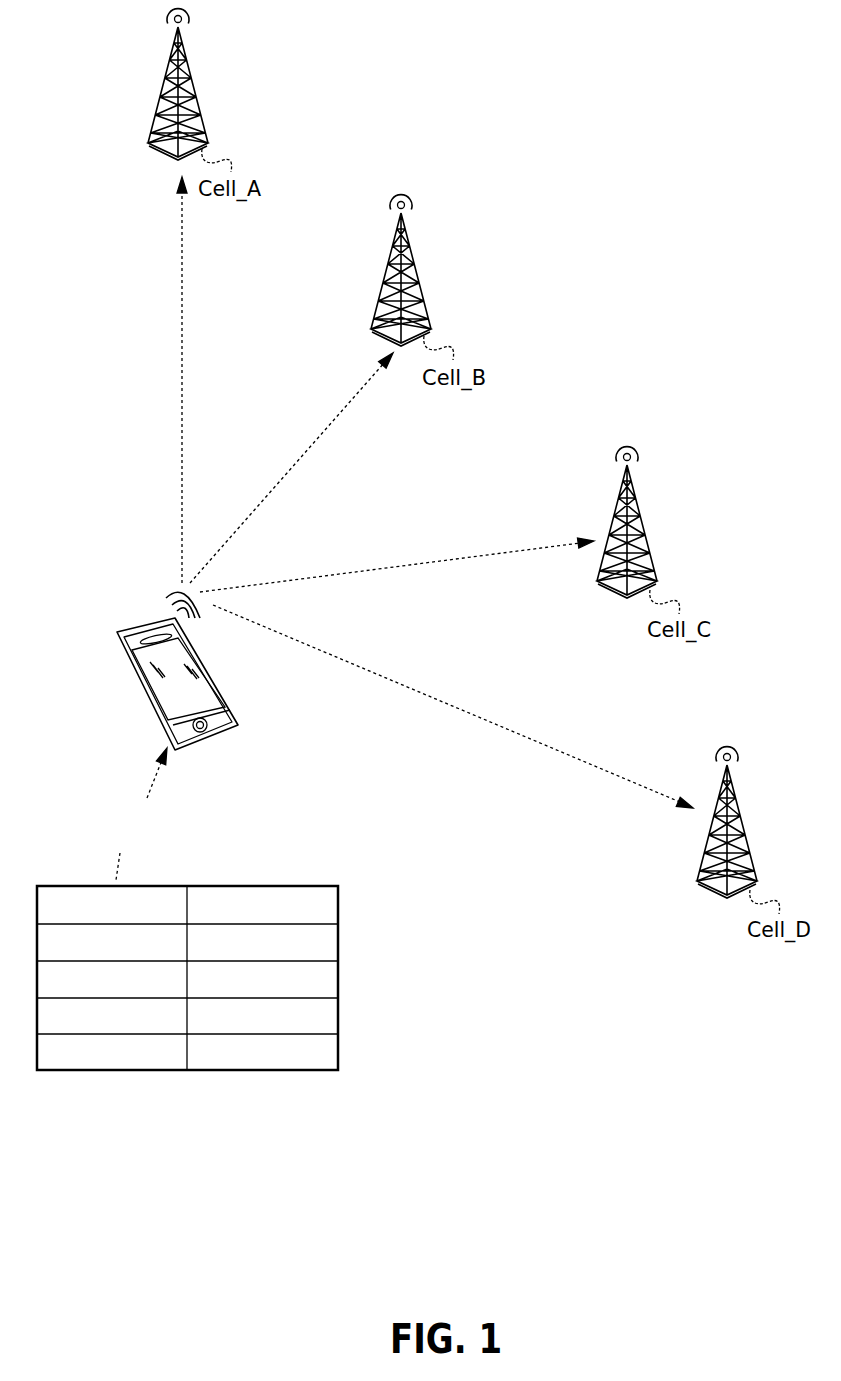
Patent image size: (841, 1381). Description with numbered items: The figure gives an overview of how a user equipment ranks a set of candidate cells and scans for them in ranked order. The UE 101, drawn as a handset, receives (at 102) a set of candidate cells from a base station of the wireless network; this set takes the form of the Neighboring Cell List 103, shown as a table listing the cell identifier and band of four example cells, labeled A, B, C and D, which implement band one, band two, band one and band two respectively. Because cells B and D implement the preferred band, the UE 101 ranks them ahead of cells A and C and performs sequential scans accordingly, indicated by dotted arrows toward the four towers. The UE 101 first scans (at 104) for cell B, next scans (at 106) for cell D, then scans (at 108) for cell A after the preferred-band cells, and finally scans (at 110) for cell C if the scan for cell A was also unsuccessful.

The UE 101 is at (202, 750).
The receiving of candidate cells 102 is at (141, 814).
The Neighboring Cell List (NCL) 103 is at (340, 906).
The first scan 104 is at (291, 468).
The second scan 106 is at (453, 706).
The third scan 108 is at (397, 569).
The fourth scan 110 is at (182, 380).